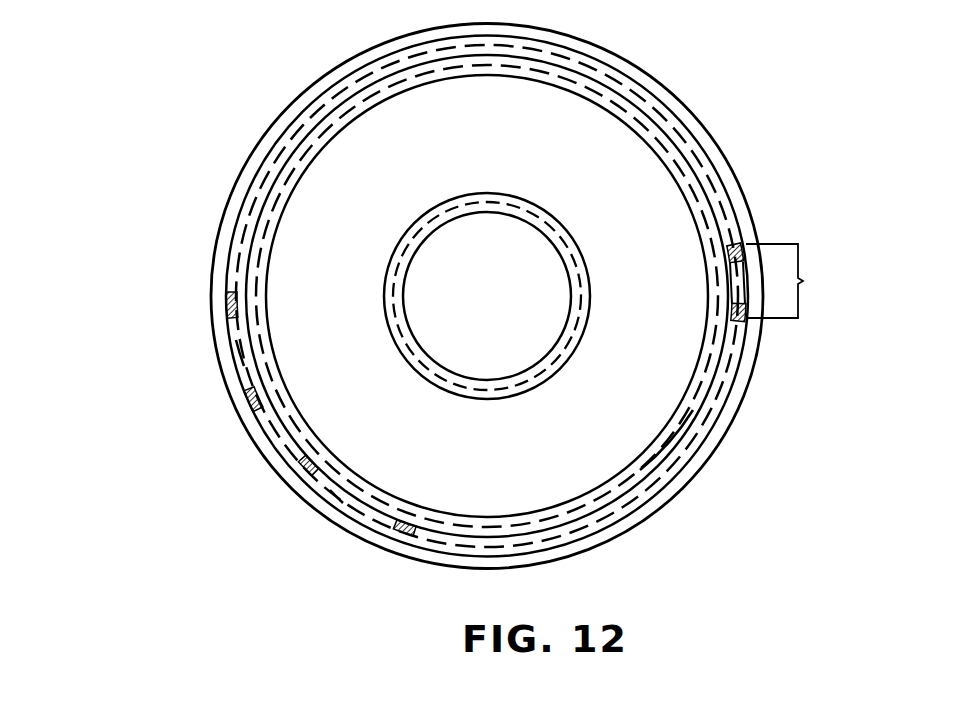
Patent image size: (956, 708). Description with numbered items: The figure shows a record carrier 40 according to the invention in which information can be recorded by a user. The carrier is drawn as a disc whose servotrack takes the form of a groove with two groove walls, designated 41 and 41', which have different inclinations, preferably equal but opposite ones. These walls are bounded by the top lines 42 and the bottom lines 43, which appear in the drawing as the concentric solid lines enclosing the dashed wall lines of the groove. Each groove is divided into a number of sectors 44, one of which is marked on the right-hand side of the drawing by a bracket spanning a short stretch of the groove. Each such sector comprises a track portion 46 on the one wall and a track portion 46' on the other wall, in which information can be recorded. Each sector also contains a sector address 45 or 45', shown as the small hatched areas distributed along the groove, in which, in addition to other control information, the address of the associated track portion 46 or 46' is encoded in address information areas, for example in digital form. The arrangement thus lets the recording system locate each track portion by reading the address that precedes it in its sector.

The record carrier 40 is at (668, 84).
The groove wall 41 is at (511, 296).
The groove wall 41' is at (517, 296).
The top line 42 is at (633, 493).
The bottom line 43 is at (693, 410).
The sector 44 is at (792, 281).
The sector address 45 is at (492, 331).
The sector address 45' is at (523, 400).
The track portion 46 is at (459, 330).
The track portion 46' is at (518, 415).